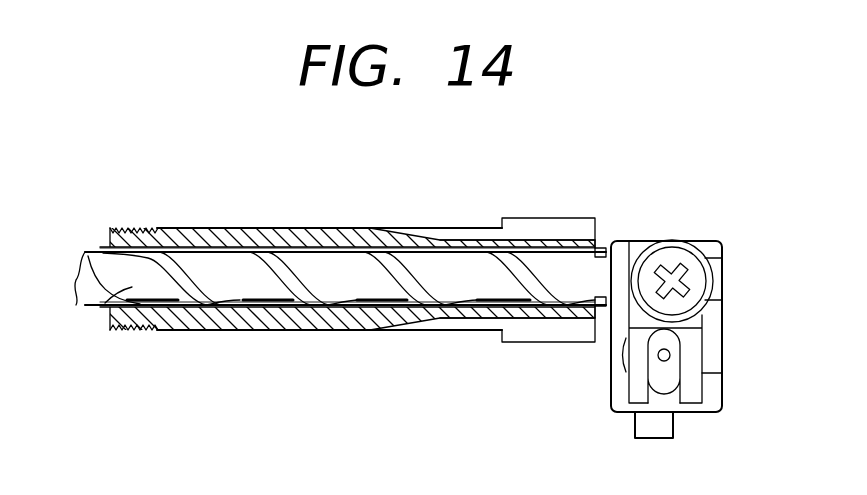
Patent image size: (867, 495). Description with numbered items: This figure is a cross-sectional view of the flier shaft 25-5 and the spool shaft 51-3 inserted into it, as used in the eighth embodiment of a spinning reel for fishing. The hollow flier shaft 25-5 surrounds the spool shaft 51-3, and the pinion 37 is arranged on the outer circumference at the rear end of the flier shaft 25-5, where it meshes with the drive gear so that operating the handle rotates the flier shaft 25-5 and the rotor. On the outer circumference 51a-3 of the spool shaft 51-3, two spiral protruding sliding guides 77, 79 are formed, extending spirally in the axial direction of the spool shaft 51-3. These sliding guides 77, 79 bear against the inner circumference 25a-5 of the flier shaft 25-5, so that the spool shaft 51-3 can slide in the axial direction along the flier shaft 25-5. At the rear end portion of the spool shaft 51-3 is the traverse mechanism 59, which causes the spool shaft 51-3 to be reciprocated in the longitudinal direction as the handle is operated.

The flier shaft 25-5 is at (218, 226).
The inner circumference of the flier shaft 25a-5 is at (437, 258).
The pinion 37 is at (565, 333).
The spiral protruding sliding guide 77 is at (152, 255).
The spool shaft 51-3 is at (146, 288).
The outer circumference of the spool shaft 51a-3 is at (381, 294).
The spiral protruding sliding guide 79 is at (530, 277).
The traverse mechanism 59 is at (684, 238).